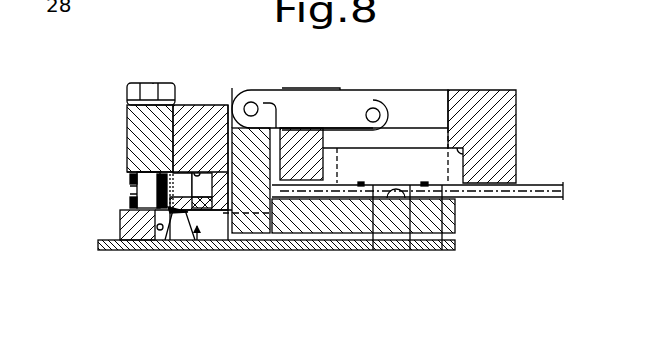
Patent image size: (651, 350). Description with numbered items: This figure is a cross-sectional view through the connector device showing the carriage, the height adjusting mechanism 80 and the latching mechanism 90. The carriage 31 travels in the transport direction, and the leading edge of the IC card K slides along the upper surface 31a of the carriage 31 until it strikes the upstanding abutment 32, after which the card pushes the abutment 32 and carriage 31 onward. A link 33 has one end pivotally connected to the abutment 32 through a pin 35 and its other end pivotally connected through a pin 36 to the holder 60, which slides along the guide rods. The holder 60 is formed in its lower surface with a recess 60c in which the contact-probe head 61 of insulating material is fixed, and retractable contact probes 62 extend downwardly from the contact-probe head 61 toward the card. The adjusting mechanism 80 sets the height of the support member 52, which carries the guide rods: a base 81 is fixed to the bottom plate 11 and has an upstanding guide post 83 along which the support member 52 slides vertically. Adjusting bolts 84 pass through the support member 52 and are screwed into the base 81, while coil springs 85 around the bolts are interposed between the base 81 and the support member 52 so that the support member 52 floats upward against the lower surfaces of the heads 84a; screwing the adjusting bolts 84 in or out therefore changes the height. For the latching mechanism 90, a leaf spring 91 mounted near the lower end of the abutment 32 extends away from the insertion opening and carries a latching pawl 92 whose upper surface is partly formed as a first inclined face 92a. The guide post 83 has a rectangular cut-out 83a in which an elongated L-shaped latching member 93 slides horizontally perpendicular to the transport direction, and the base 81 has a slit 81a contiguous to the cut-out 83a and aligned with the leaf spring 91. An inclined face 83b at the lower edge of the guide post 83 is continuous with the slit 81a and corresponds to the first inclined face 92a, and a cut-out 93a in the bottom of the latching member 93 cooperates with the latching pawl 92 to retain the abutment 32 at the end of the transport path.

The bottom plate 11 is at (298, 250).
The carriage 31 is at (343, 227).
The upper surface of the carriage 31a is at (405, 203).
The contact probes 62 is at (444, 250).
The IC card K is at (548, 185).
The pin 35 is at (230, 103).
The guide post 83 is at (213, 105).
The rectangular cut-out 83a is at (198, 172).
The inclined face 83b is at (232, 222).
The support member 52 is at (133, 125).
The latching member 93 is at (142, 83).
The heads of the adjusting bolts 84a is at (153, 83).
The adjusting bolts 84 is at (147, 185).
The first inclined face 92a is at (163, 188).
The coil springs 85 is at (130, 202).
The latching pawl 92 is at (182, 217).
The base 81 is at (123, 218).
The slit 81a is at (158, 222).
The cut-out 93a is at (157, 225).
The leaf spring 91 is at (208, 217).
The latching mechanism 90 is at (210, 262).
The abutment 32 is at (250, 87).
The link 33 is at (320, 107).
The pin 36 is at (372, 93).
The contact-probe head 61 is at (418, 160).
The holder 60 is at (495, 88).
The recess 60c is at (460, 150).
The adjusting mechanism 80 is at (113, 183).